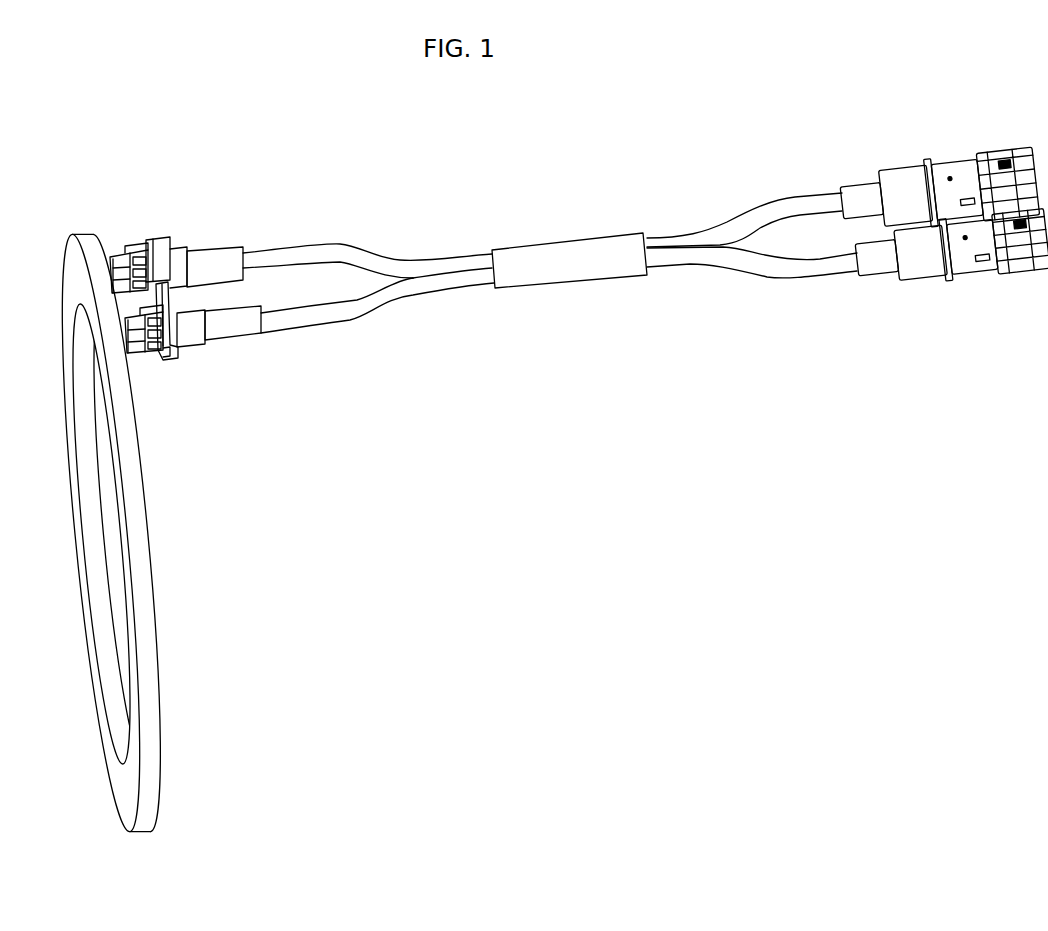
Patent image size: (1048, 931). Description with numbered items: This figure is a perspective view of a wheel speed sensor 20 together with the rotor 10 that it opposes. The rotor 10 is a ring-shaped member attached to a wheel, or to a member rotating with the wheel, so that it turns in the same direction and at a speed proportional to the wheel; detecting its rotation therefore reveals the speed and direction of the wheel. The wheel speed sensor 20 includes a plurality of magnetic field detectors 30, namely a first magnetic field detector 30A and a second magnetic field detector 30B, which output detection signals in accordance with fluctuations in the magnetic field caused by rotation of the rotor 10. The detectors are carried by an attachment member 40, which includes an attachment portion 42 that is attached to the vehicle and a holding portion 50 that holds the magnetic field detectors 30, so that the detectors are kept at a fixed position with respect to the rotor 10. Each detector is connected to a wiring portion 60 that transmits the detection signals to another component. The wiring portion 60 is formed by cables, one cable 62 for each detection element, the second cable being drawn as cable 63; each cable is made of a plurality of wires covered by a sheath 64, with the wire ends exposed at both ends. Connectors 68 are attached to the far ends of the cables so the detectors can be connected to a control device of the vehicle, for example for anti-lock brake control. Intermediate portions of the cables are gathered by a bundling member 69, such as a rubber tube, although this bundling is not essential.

The rotor 10 is at (158, 715).
The wheel speed sensor 20 is at (274, 215).
The magnetic field detector 30 is at (160, 305).
The first magnetic field detector 30A is at (114, 258).
The second magnetic field detector 30B is at (137, 353).
The attachment member 40 is at (184, 360).
The attachment portion 42 is at (172, 241).
The holding portion 50 is at (204, 341).
The wiring portion 60 is at (630, 218).
The cable 62 is at (376, 247).
The second cable 63 is at (383, 317).
The sheath 64 is at (453, 264).
The connector 68 is at (950, 203).
The bundling member 69 is at (577, 280).